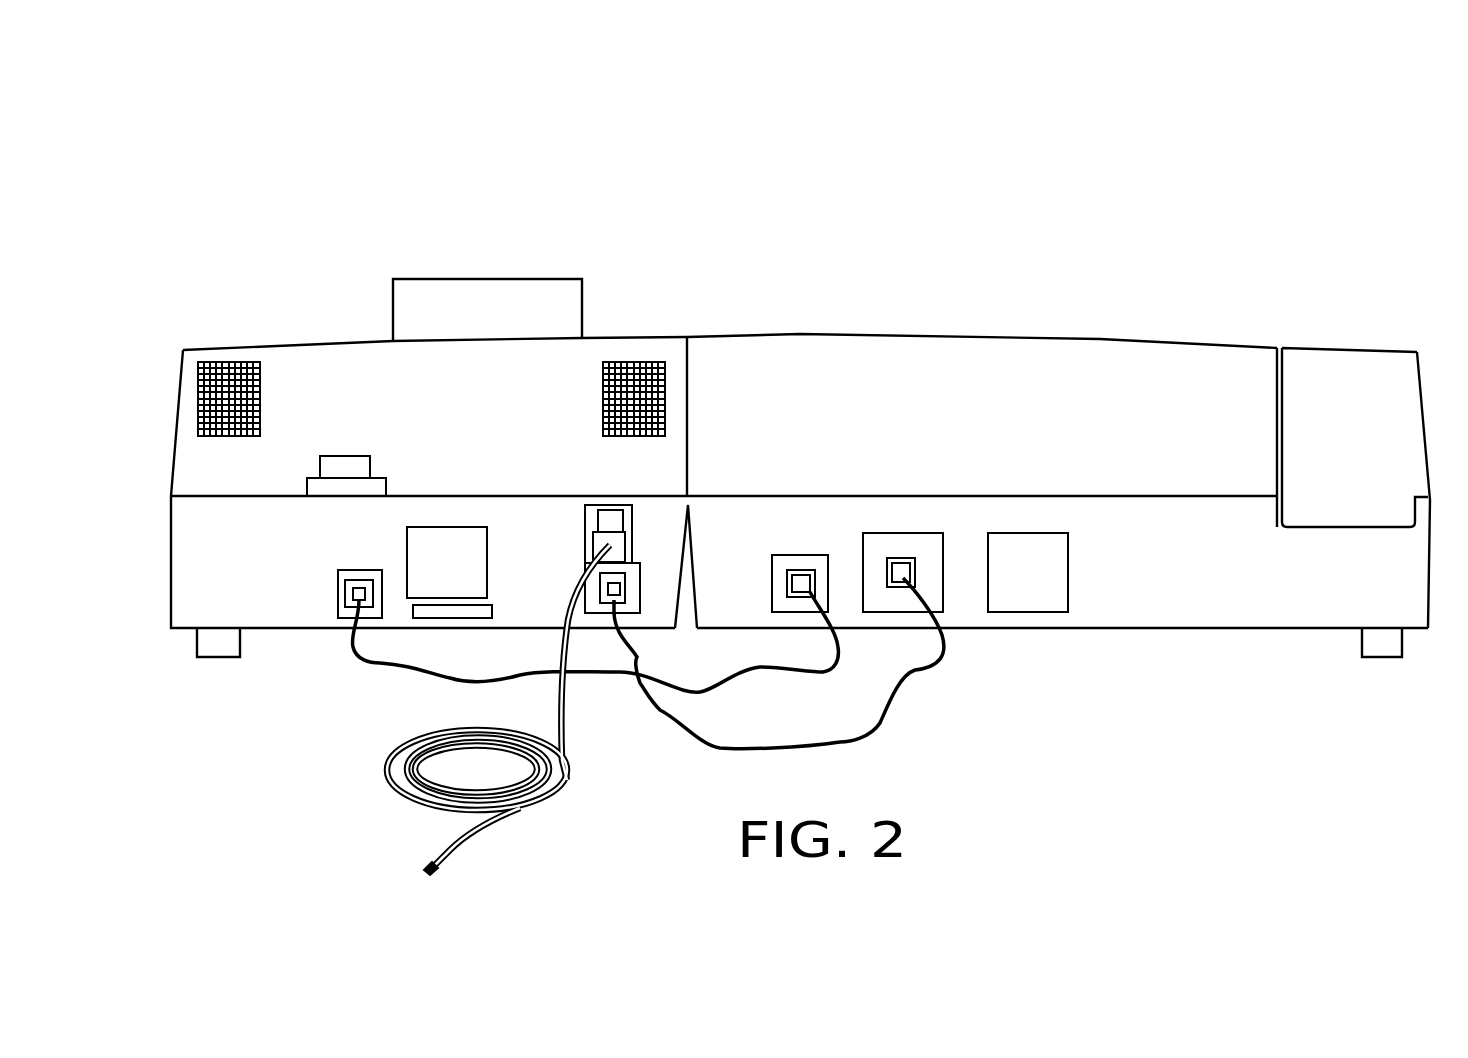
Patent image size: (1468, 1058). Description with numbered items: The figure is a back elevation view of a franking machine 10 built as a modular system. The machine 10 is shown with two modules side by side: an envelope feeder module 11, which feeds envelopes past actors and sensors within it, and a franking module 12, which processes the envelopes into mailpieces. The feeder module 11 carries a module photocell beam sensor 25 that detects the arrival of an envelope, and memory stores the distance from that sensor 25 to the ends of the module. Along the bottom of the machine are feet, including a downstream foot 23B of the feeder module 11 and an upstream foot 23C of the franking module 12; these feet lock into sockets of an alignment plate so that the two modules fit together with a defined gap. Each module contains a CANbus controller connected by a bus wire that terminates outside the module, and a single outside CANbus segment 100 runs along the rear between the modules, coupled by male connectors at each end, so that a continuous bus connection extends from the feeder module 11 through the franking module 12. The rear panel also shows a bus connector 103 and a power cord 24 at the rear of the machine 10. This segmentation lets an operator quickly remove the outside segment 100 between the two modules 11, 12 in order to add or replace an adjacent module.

The franking machine 10 is at (1060, 305).
The envelope feeder module 11 is at (802, 333).
The franking module 12 is at (300, 344).
The module photocell beam sensor 25 is at (1348, 383).
The downstream foot 23B is at (1381, 657).
The upstream foot 23C is at (197, 655).
The bus connector 103 is at (340, 608).
The outside CANbus segment 100 is at (383, 665).
The power cord 24 is at (570, 783).